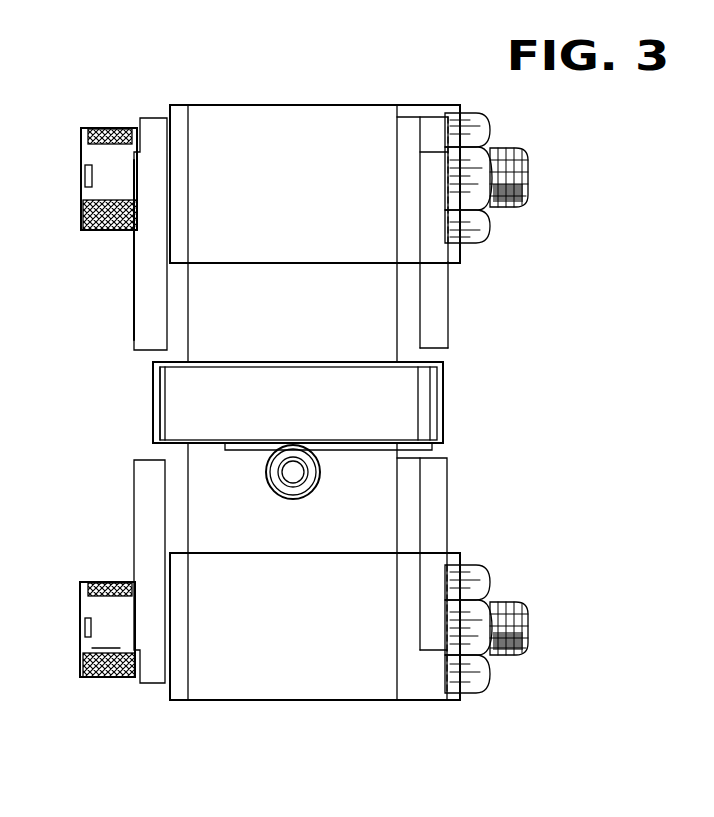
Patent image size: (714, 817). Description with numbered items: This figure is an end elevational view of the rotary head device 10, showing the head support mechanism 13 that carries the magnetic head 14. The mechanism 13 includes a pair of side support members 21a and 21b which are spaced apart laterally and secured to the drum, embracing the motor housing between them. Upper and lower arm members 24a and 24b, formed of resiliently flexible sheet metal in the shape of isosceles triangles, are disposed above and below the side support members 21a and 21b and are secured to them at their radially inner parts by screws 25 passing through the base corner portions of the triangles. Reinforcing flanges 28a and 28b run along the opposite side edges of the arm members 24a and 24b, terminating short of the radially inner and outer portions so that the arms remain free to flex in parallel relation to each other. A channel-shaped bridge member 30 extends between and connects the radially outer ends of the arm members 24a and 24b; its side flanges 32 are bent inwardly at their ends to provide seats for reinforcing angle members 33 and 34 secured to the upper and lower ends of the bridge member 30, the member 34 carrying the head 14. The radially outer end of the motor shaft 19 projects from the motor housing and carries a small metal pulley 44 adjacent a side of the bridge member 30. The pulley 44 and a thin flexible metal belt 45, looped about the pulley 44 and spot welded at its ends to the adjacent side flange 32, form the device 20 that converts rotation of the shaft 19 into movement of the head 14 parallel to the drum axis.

The clamp assembly 10 is at (540, 317).
The head support mechanism 13 is at (226, 100).
The magnetic head 14 is at (445, 403).
The motor shaft 19 is at (293, 470).
The converting device 20 is at (267, 487).
The side support member 21a is at (310, 116).
The side support member 21b is at (307, 697).
The upper arm member 24a is at (152, 262).
The lower arm member 24b is at (438, 277).
The screws 25 is at (115, 127).
The reinforcing flange 28a is at (148, 304).
The reinforcing flange 28b is at (438, 302).
The bridge member 30 is at (299, 359).
The side flanges 32 is at (217, 358).
The reinforcing angle member 33 is at (152, 405).
The reinforcing angle member 34 is at (427, 385).
The pulley 44 is at (303, 480).
The flexible metal belt 45 is at (312, 480).